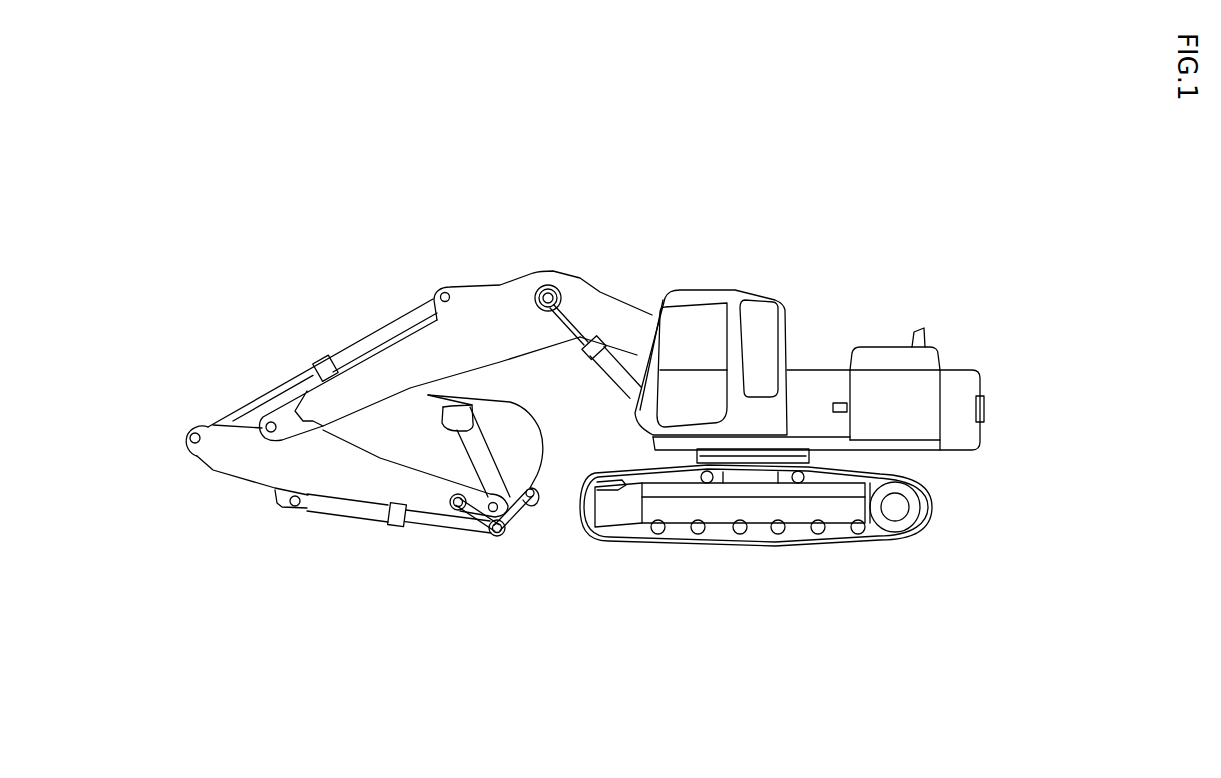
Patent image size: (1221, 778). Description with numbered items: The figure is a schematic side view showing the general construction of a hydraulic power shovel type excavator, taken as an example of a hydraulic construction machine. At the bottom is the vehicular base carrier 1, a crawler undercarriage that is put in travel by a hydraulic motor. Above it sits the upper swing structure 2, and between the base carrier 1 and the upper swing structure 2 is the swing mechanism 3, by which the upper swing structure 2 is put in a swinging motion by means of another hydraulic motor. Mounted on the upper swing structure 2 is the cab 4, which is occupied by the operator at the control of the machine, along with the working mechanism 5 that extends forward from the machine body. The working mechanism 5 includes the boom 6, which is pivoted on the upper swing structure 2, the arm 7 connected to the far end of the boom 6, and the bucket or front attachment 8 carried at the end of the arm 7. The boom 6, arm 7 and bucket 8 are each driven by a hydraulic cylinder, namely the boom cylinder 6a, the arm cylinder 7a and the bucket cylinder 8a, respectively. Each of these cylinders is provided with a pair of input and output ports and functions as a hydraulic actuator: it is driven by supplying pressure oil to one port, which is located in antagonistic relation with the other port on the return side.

The vehicular base carrier 1 is at (722, 548).
The upper swing structure 2 is at (823, 416).
The swing mechanism 3 is at (760, 462).
The cab 4 is at (712, 290).
The working mechanism 5 is at (419, 380).
The boom 6 is at (597, 293).
The boom cylinder 6a is at (598, 380).
The arm 7 is at (407, 493).
The arm cylinder 7a is at (368, 333).
The bucket 8 is at (513, 447).
The bucket cylinder 8a is at (345, 518).